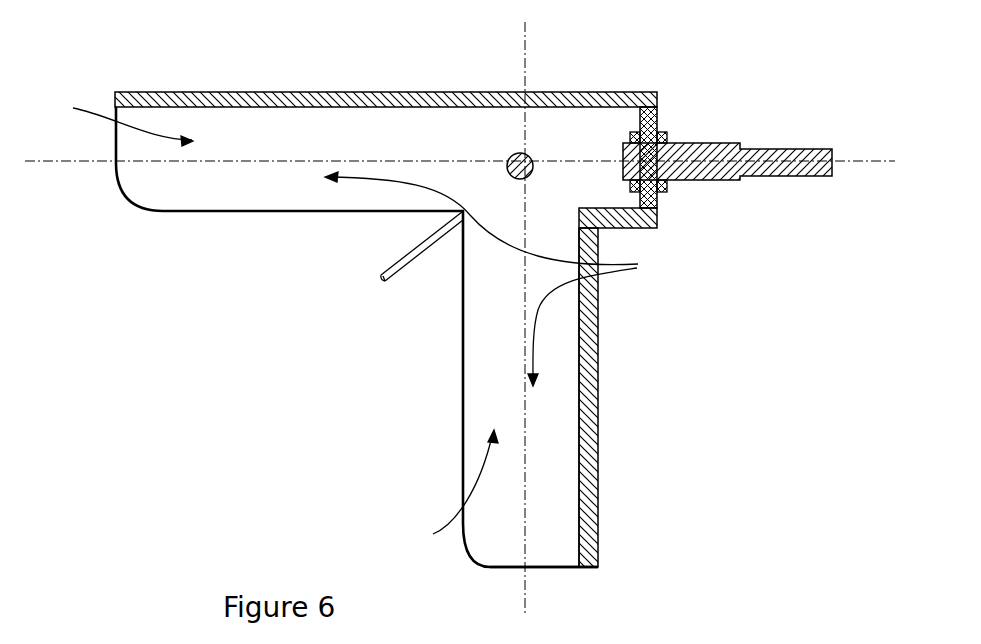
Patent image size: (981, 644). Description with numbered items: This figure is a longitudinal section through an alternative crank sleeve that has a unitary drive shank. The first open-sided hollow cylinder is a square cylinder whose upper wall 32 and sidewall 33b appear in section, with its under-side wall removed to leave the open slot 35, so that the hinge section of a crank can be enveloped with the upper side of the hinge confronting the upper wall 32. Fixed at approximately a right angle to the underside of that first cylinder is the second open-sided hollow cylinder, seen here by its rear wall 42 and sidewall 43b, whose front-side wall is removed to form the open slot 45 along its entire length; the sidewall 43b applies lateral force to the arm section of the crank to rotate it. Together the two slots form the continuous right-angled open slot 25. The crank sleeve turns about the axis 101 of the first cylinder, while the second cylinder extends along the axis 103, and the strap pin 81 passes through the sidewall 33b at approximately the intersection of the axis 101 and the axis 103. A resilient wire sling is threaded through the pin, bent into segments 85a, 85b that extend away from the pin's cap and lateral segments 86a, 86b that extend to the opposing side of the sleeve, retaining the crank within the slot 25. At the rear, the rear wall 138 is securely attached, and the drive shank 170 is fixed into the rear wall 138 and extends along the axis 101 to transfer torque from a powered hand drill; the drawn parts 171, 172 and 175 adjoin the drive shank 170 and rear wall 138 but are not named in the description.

The continuous right-angled open slot 25 is at (502, 279).
The upper wall 32 is at (390, 92).
The sidewall 33b is at (247, 130).
The open slot 35 is at (110, 116).
The rear wall 42 is at (598, 375).
The sidewall 43b is at (545, 455).
The open slot 45 is at (445, 492).
The strap pin 81 is at (517, 152).
The segment 85a is at (395, 222).
The segment 85b is at (427, 250).
The lateral segment 86a is at (383, 277).
The lateral segment 86b is at (393, 283).
The axis 101 is at (857, 164).
The axis 103 is at (518, 585).
The rear wall 138 is at (658, 125).
The drive shank 170 is at (715, 120).
The bracket 171 is at (663, 207).
The shaft 172 is at (808, 148).
The nut 175 is at (668, 185).